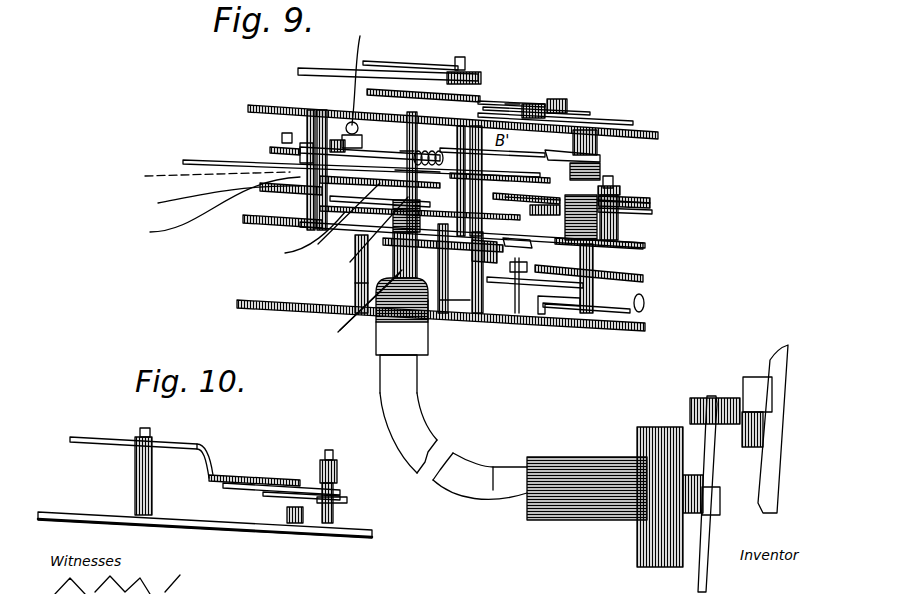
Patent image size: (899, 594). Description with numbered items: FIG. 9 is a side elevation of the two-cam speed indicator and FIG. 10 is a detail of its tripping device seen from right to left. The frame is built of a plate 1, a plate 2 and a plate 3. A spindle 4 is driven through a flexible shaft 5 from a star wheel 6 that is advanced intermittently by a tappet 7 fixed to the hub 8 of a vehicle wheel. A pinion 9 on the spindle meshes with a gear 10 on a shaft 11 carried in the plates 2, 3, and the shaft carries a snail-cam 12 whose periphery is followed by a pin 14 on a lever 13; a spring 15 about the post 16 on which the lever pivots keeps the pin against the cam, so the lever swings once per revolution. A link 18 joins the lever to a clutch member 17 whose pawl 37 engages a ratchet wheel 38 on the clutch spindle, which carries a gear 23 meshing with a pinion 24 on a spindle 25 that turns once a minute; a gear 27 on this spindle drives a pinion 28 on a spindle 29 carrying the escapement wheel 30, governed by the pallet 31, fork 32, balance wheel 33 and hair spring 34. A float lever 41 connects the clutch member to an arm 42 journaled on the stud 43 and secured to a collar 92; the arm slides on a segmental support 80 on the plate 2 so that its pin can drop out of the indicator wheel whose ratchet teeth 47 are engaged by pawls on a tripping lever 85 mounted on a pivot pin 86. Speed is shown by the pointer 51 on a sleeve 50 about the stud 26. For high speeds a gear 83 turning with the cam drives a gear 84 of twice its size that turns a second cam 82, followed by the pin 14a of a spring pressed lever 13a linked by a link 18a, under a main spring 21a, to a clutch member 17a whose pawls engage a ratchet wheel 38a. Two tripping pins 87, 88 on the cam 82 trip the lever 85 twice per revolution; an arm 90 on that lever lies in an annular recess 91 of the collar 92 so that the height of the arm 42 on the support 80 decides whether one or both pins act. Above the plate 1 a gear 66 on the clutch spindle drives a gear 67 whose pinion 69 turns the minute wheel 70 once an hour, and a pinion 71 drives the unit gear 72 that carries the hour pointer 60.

In FIG. 9, the plate 1 is at (453, 113).
In FIG. 9, the plate 2 is at (646, 245).
In FIG. 10, the plate 2 is at (358, 533).
In FIG. 9, the plate 3 is at (237, 302).
In FIG. 9, the spindle 4 is at (376, 320).
In FIG. 9, the flexible shaft 5 is at (416, 425).
In FIG. 9, the star wheel 6 is at (710, 525).
In FIG. 9, the tappet 7 is at (713, 398).
In FIG. 9, the hub 8 is at (780, 378).
In FIG. 9, the pinion 9 is at (378, 235).
In FIG. 9, the gear 10 is at (300, 197).
In FIG. 9, the shaft 11 is at (356, 283).
In FIG. 9, the snail-cam 12 is at (243, 222).
In FIG. 9, the lever 13 is at (500, 190).
In FIG. 9, the spring pressed lever 13a is at (437, 170).
In FIG. 9, the pin 14 is at (299, 236).
In FIG. 9, the pin 14a is at (350, 160).
In FIG. 9, the spring 15 is at (598, 248).
In FIG. 9, the post 16 is at (598, 153).
In FIG. 9, the clutch member 17 is at (600, 170).
In FIG. 9, the clutch member 17a is at (209, 198).
In FIG. 9, the link 18 is at (412, 162).
In FIG. 9, the link 18a is at (366, 134).
In FIG. 9, the main spring 21a is at (363, 68).
In FIG. 9, the gear 23 is at (530, 245).
In FIG. 9, the pinion 24 is at (370, 294).
In FIG. 9, the staff or spindle 25 is at (448, 305).
In FIG. 9, the stud 26 is at (470, 54).
In FIG. 9, the gear 27 is at (423, 256).
In FIG. 9, the pinion 28 is at (484, 263).
In FIG. 9, the spindle 29 is at (480, 300).
In FIG. 9, the escapement wheel 30 is at (495, 284).
In FIG. 9, the pallet 31 is at (516, 313).
In FIG. 9, the fork 32 is at (552, 312).
In FIG. 9, the balance wheel 33 is at (645, 273).
In FIG. 9, the hair spring 34 is at (620, 312).
In FIG. 9, the pawl 37 is at (570, 230).
In FIG. 9, the ratchet wheel 38 is at (540, 215).
In FIG. 9, the ratchet wheel 38a is at (201, 171).
In FIG. 9, the float lever 41 is at (530, 205).
In FIG. 10, the float lever 41 is at (242, 484).
In FIG. 9, the arm or crank 42 is at (636, 208).
In FIG. 10, the arm or crank 42 is at (348, 500).
In FIG. 9, the stud 43 is at (621, 182).
In FIG. 10, the stud 43 is at (338, 467).
In FIG. 9, the ratchet teeth 47 is at (518, 197).
In FIG. 9, the sleeve 50 is at (472, 77).
In FIG. 9, the pointer or indicator arm 51 is at (420, 59).
In FIG. 9, the pointer or indicator 60 is at (342, 68).
In FIG. 9, the bar 66 is at (515, 104).
In FIG. 9, the gear 67 is at (572, 112).
In FIG. 9, the pinion 69 is at (540, 104).
In FIG. 9, the minute wheel 70 is at (608, 118).
In FIG. 9, the pinion 71 is at (563, 95).
In FIG. 9, the unit gear 72 is at (514, 95).
In FIG. 10, the segmental support 80 is at (295, 525).
In FIG. 9, the cam 82 is at (268, 150).
In FIG. 9, the gear 83 is at (338, 219).
In FIG. 9, the gear 84 is at (210, 208).
In FIG. 9, the tripping lever 85 is at (443, 150).
In FIG. 10, the tripping lever 85 is at (192, 443).
In FIG. 10, the pivot pin 86 is at (142, 432).
In FIG. 9, the tripping pin 87 is at (282, 138).
In FIG. 9, the tripping pin 88 is at (337, 140).
In FIG. 10, the arm 90 is at (287, 492).
In FIG. 9, the annular recess 91 is at (652, 197).
In FIG. 9, the collar 92 is at (652, 205).